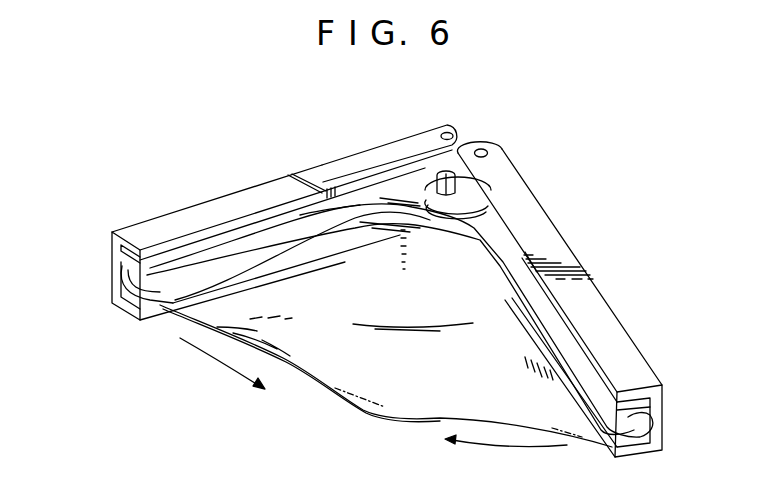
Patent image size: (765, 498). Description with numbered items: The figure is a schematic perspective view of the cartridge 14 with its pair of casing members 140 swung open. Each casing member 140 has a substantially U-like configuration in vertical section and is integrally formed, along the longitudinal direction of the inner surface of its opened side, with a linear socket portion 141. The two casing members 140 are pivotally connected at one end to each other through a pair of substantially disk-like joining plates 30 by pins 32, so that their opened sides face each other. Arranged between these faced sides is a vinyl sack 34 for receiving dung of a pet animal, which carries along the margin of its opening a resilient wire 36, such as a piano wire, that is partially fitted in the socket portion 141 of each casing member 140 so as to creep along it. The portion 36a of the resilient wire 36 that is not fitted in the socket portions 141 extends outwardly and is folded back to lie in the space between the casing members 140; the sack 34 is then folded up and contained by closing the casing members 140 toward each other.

The cartridge 14 is at (383, 145).
The joining plate 30 is at (465, 129).
The pin 32 is at (442, 132).
The vinyl sack 34 is at (338, 363).
The resilient wire 36 is at (117, 280).
The portion of the resilient wire 36a is at (347, 216).
The casing member 140 is at (238, 200).
The socket portion 141 is at (117, 246).